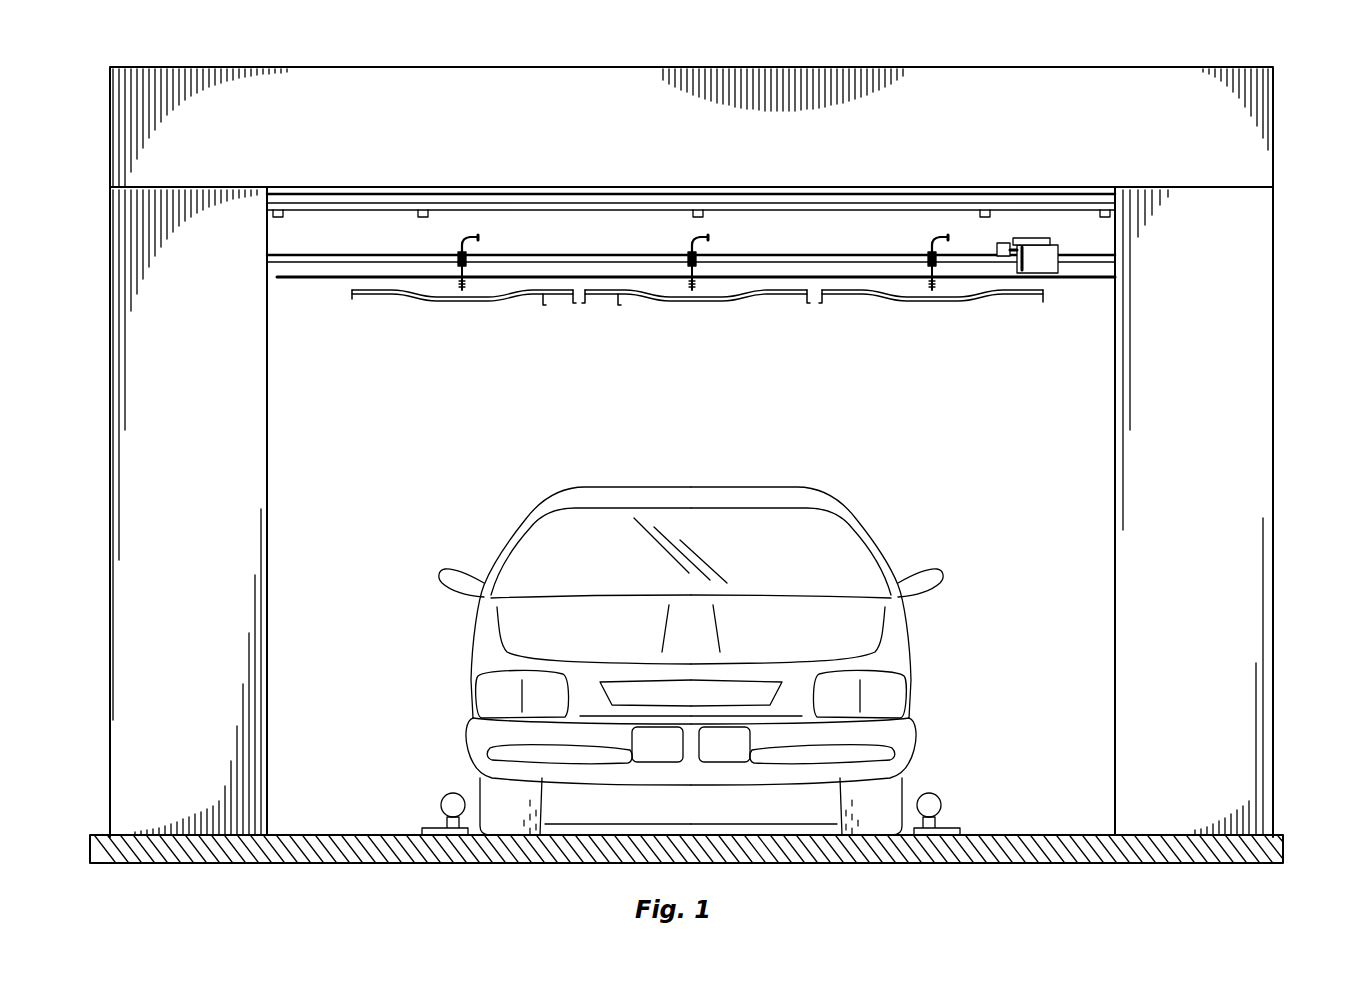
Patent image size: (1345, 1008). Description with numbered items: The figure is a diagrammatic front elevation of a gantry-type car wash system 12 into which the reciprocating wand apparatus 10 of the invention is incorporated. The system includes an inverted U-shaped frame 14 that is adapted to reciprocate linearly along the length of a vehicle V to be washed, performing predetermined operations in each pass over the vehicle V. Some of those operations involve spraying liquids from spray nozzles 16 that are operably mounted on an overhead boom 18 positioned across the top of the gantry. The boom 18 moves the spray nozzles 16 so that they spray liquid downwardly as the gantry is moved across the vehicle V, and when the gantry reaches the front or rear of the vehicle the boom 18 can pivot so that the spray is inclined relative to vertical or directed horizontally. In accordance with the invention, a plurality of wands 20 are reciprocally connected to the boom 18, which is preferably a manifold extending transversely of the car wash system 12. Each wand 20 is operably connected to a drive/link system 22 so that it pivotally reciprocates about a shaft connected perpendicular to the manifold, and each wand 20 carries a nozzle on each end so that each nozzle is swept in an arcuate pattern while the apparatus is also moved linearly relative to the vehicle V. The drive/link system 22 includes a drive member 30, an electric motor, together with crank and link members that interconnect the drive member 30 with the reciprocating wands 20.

The apparatus 10 is at (888, 370).
The gantry-type car wash system 12 is at (1280, 524).
The inverted U-shaped frame 14 is at (1208, 365).
The spray nozzles 16 is at (353, 298).
The overhead boom 18 is at (320, 267).
The wands 20 is at (543, 294).
The drive/link system 22 is at (793, 253).
The drive member 30 is at (1040, 252).
The vehicle V is at (892, 662).